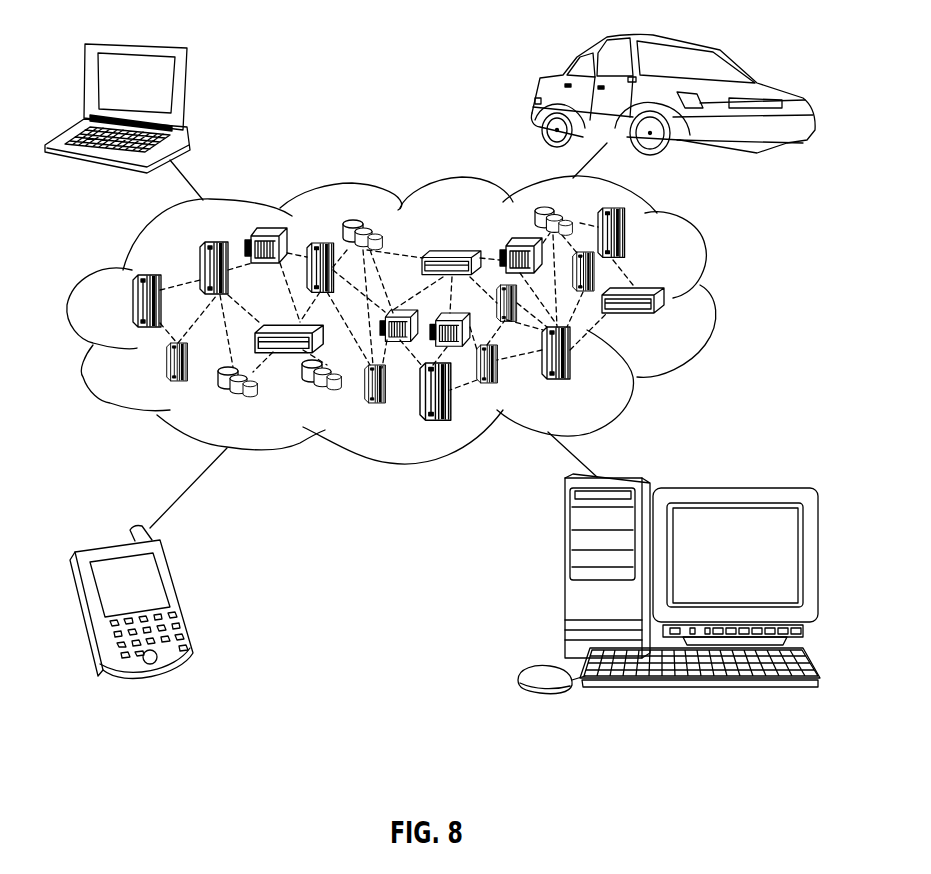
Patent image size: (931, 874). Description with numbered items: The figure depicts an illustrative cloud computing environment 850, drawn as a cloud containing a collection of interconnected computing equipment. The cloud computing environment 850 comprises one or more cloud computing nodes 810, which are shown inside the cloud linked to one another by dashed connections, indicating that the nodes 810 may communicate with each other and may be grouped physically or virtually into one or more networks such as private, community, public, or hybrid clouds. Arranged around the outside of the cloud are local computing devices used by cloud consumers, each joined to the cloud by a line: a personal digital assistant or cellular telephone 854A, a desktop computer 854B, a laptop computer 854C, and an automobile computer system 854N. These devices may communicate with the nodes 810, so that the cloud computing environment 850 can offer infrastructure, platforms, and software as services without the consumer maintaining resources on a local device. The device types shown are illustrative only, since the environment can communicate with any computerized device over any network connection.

The cloud computing nodes 810 is at (443, 320).
The cloud computing environment 850 is at (707, 267).
The personal digital assistant or cellular telephone 854A is at (178, 593).
The desktop computer 854B is at (565, 573).
The laptop computer 854C is at (187, 87).
The automobile computer system 854N is at (537, 92).